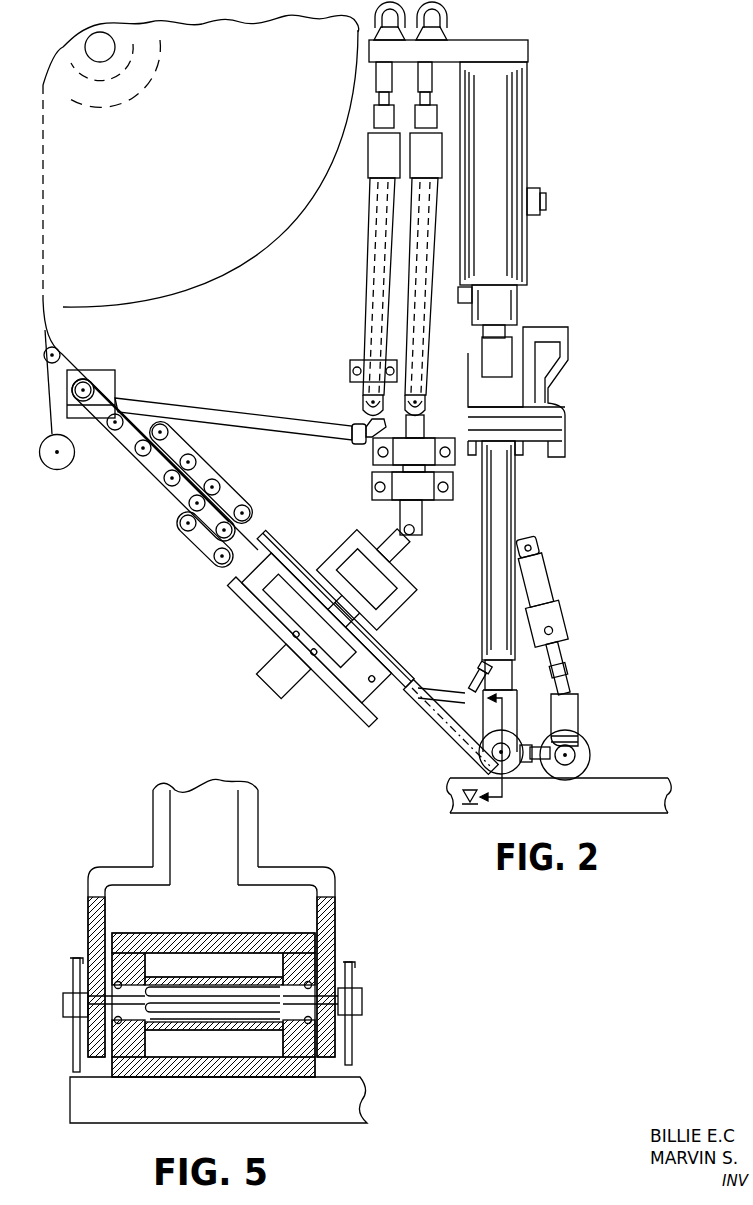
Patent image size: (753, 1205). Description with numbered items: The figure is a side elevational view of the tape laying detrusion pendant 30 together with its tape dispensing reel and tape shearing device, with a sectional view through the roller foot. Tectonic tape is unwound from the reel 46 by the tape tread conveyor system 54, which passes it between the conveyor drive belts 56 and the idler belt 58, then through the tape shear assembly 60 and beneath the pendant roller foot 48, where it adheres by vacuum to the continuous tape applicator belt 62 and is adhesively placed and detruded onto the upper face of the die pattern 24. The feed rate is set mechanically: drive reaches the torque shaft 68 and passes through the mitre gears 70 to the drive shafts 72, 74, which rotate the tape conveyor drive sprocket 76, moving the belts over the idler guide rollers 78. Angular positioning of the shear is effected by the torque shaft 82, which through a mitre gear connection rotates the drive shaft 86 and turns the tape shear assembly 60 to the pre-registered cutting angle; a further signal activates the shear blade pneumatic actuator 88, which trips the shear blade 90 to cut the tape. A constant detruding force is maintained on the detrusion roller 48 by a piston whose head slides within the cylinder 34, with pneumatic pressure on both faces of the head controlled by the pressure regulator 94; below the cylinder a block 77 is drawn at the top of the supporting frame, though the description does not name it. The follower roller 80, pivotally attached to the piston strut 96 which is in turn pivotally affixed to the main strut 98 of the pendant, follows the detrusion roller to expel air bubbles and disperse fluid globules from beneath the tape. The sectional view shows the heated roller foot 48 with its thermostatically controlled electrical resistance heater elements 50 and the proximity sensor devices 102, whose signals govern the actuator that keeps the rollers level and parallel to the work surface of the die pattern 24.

In FIG. 2, the die pattern 24 is at (590, 806).
In FIG. 5, the die pattern 24 is at (243, 1107).
In FIG. 2, the tape laying detrusion pendant 30 is at (556, 244).
In FIG. 2, the cylinder 34 is at (505, 144).
In FIG. 2, the reel 46 is at (160, 136).
In FIG. 2, the detrusion roller-foot 48 is at (474, 760).
In FIG. 5, the detrusion roller-foot 48 is at (215, 935).
In FIG. 5, the electrical resistance heater elements 50 is at (195, 990).
In FIG. 2, the tape tread conveyor system 54 is at (172, 505).
In FIG. 2, the conveyor drive belts 56 is at (163, 487).
In FIG. 2, the idler belt 58 is at (214, 463).
In FIG. 2, the tape shear assembly 60 is at (388, 637).
In FIG. 2, the continuous tape applicator belt 62 is at (440, 722).
In FIG. 2, the torque shaft 68 is at (393, 40).
In FIG. 2, the mitre gears 70 is at (353, 41).
In FIG. 2, the drive shaft 72 is at (371, 266).
In FIG. 2, the drive shaft 74 is at (222, 412).
In FIG. 2, the tape conveyor drive sprocket 76 is at (114, 395).
In FIG. 2, the block 77 is at (508, 367).
In FIG. 2, the idler guide rollers 78 is at (128, 452).
In FIG. 2, the follower roller 80 is at (588, 748).
In FIG. 2, the torque shaft 82 is at (436, 40).
In FIG. 2, the drive shaft 86 is at (424, 346).
In FIG. 2, the shear blade pneumatic actuator 88 is at (285, 687).
In FIG. 2, the shear blade 90 is at (290, 605).
In FIG. 2, the pressure regulator 94 is at (542, 203).
In FIG. 2, the piston strut 96 is at (542, 583).
In FIG. 2, the main strut 98 is at (492, 489).
In FIG. 2, the proximity sensor devices 102 is at (503, 785).
In FIG. 5, the proximity sensor devices 102 is at (352, 1040).